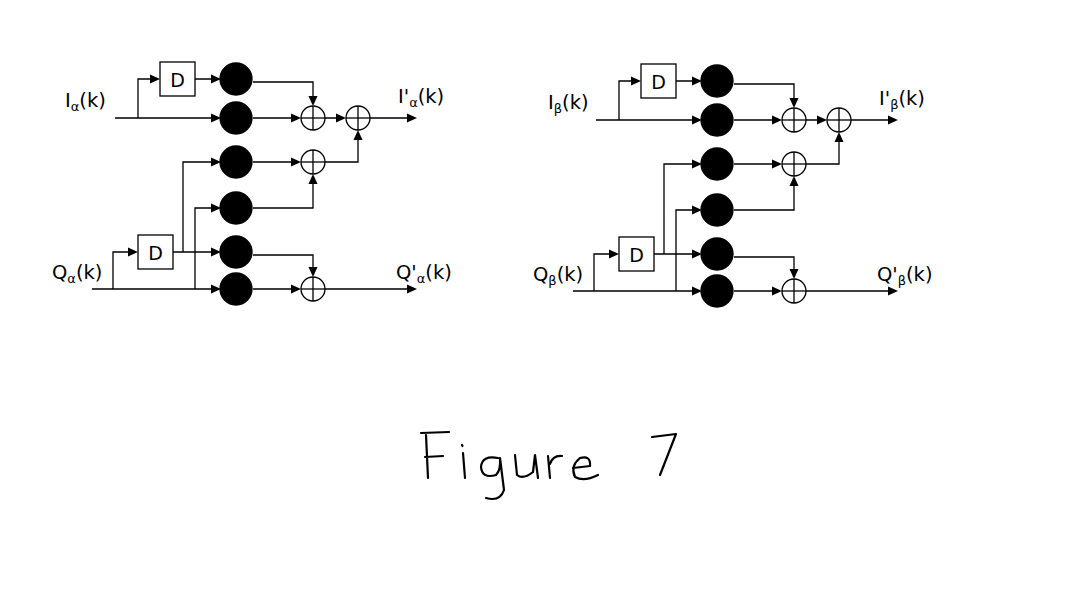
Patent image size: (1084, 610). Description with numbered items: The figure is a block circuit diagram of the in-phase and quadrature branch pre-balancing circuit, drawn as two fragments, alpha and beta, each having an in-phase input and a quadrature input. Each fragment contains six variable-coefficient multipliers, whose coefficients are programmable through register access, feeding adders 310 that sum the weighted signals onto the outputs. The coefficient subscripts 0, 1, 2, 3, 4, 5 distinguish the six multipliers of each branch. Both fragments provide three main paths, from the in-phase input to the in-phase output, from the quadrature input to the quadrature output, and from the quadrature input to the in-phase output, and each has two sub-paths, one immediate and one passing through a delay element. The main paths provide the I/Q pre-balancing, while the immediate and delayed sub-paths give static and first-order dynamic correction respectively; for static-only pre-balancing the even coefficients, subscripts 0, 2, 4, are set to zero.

The adders 310 is at (330, 178).
The coefficient multiplier a0/b0 0 is at (476, 80).
The coefficient multiplier a1/b1 1 is at (476, 119).
The coefficient multiplier a2/b2 2 is at (476, 163).
The coefficient multiplier a3/b3 3 is at (476, 209).
The coefficient multiplier a4/b4 4 is at (476, 253).
The coefficient multiplier a5/b5 5 is at (476, 290).